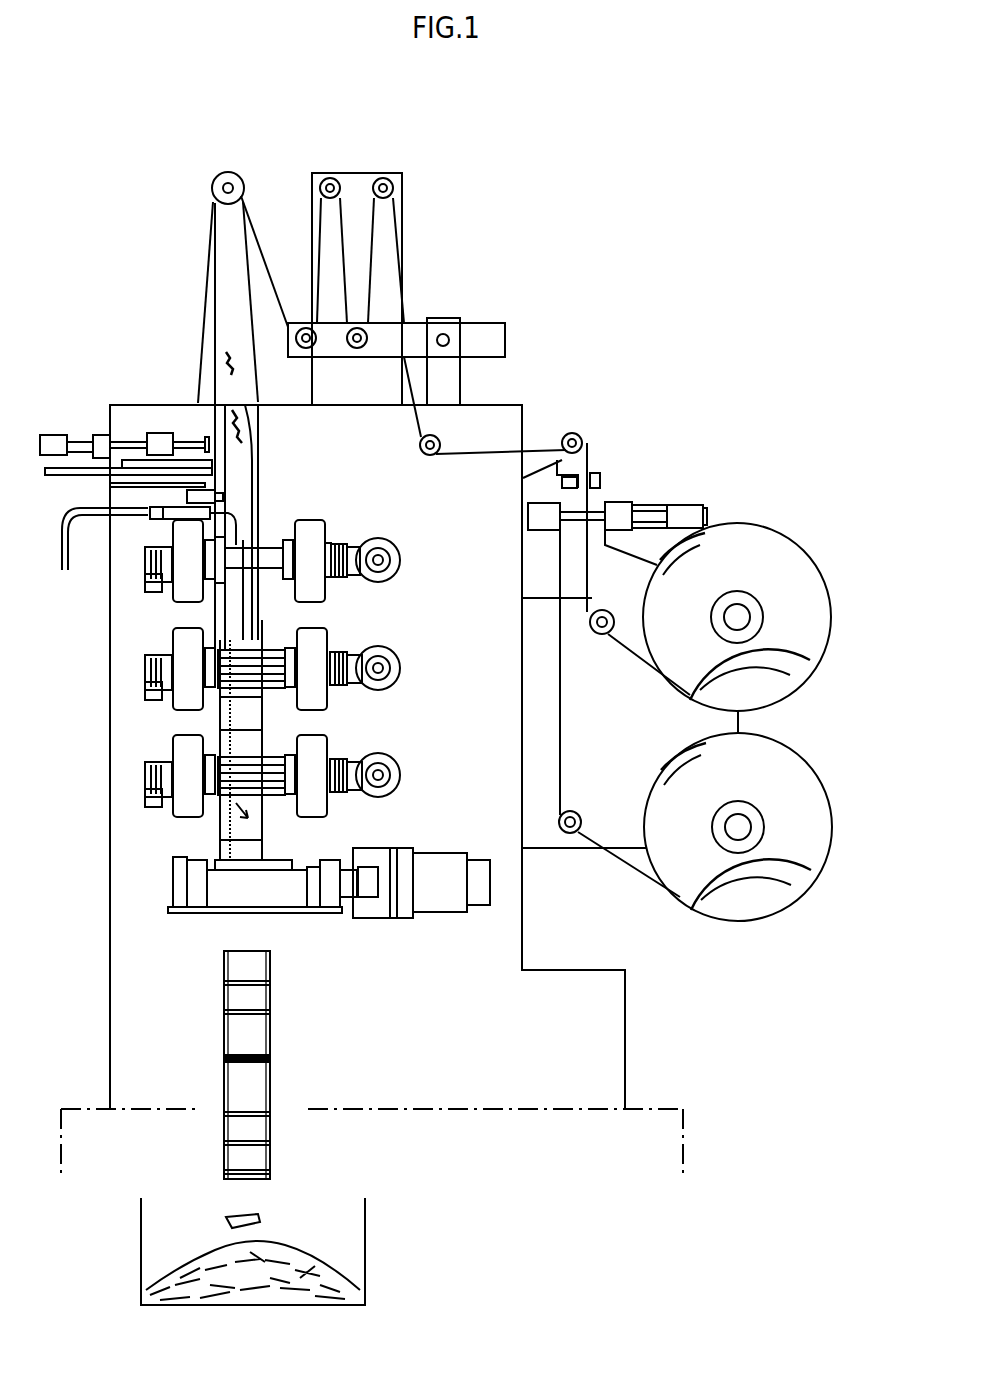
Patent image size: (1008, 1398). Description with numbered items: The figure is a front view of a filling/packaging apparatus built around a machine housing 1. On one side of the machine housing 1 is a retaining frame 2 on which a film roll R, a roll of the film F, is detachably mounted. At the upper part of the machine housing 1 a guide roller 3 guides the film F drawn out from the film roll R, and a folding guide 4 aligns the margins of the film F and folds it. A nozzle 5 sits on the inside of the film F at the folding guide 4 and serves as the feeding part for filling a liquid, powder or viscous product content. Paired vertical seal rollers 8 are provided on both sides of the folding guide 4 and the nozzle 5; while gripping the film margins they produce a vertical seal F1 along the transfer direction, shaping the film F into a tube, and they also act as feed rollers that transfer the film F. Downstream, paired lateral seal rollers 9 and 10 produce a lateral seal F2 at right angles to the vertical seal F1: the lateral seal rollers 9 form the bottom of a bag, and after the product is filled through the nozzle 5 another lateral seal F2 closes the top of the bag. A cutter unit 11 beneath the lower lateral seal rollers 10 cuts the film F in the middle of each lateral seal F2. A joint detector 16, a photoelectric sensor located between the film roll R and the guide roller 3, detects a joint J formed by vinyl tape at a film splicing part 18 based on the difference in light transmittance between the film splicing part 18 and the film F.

The machine housing 1 is at (507, 418).
The retaining frame 2 is at (762, 605).
The guide roller 3 is at (238, 172).
The folding guide 4 is at (257, 497).
The nozzle 5 is at (243, 610).
The vertical seal rollers 8 is at (229, 538).
The lateral seal rollers 9 is at (277, 680).
The lateral seal rollers 10 is at (257, 767).
The cutter unit 11 is at (215, 872).
The joint detector 16 is at (606, 470).
The film splicing part 18 is at (262, 1060).
The film F is at (230, 352).
The vertical seal F1 is at (224, 1042).
The lateral seal F2 is at (265, 985).
The joint J is at (288, 1053).
The film roll R is at (808, 638).